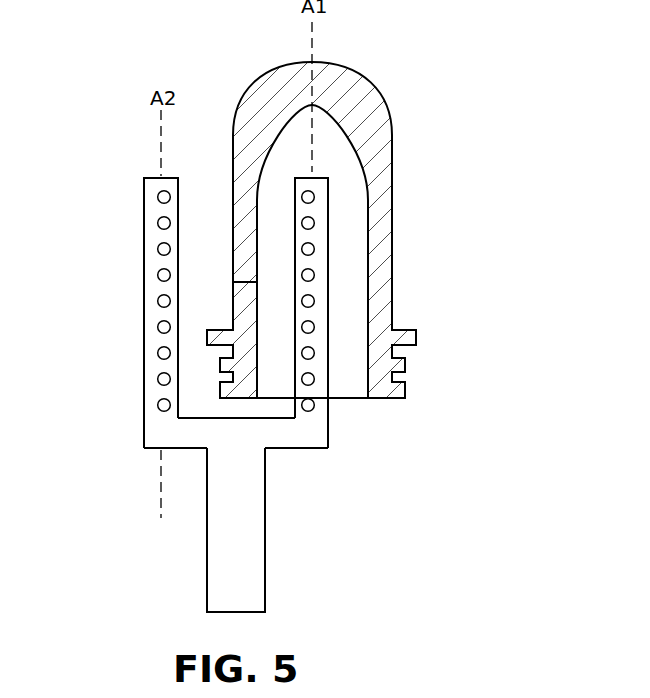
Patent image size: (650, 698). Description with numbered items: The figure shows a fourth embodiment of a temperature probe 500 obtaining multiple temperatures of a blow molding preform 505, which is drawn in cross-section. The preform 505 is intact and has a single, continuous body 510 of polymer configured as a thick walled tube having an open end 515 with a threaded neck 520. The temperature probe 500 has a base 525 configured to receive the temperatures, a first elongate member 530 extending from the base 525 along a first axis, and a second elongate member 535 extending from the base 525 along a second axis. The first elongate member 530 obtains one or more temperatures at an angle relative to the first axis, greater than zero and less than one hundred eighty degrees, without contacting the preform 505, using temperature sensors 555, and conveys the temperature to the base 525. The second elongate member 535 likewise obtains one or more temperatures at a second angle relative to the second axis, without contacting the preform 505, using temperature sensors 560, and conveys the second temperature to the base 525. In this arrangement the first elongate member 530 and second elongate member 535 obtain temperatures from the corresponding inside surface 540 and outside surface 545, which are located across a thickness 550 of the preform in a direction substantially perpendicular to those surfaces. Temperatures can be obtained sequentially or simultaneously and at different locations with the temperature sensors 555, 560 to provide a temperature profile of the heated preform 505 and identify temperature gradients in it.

The temperature probe 500 is at (120, 375).
The blow molding preform 505 is at (441, 112).
The body 510 is at (392, 212).
The open end 515 is at (386, 400).
The threaded neck 520 is at (405, 365).
The base 525 is at (265, 545).
The first elongate member 530 is at (329, 258).
The second elongate member 535 is at (144, 241).
The inside surface 540 is at (257, 278).
The outside surface 545 is at (232, 282).
The thickness 550 is at (255, 280).
The temperature sensors 555 is at (158, 275).
The temperature sensors 560 is at (314, 301).